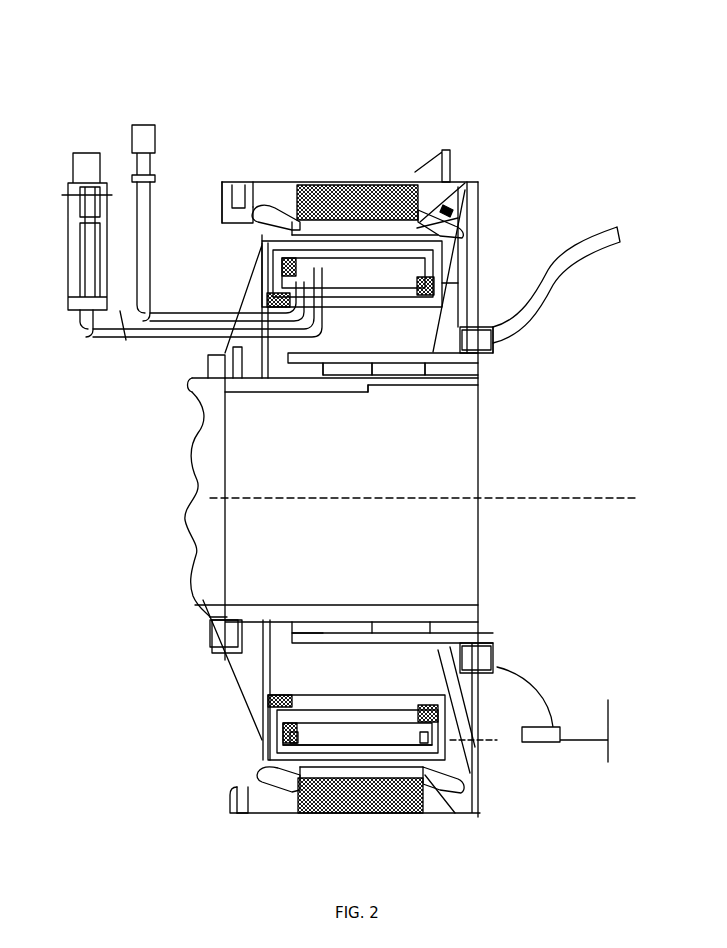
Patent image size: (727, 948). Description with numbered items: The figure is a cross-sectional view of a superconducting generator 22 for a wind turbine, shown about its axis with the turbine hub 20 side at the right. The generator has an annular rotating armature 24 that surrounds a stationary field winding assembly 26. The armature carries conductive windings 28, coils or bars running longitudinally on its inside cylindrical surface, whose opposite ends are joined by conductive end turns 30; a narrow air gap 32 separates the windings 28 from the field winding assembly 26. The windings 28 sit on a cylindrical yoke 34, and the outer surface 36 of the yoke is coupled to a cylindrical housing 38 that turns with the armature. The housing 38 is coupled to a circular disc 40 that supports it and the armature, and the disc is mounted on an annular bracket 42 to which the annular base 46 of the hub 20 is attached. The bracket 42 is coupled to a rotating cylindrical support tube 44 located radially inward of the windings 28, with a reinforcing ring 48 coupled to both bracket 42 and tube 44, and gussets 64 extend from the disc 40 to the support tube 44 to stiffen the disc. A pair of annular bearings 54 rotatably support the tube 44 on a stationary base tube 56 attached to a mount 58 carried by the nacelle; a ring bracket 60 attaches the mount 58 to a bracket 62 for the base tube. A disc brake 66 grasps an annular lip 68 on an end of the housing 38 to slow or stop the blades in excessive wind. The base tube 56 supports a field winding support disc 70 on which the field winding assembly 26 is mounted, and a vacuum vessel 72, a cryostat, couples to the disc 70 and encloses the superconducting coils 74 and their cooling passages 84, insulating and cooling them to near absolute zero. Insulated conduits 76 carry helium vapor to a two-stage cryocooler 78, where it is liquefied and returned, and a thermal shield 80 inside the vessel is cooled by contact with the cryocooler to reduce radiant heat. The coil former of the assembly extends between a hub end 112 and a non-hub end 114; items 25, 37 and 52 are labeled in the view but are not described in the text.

The hub 20 is at (593, 242).
The superconducting generator 22 is at (530, 56).
The rotating armature 24 is at (283, 207).
The bobbin flange 25 is at (262, 722).
The stationary field winding assembly 26 is at (470, 240).
The conductive windings 28 is at (300, 183).
The conductive end turns 30 is at (478, 190).
The air gap 32 is at (470, 215).
The cylindrical yoke 34 is at (340, 188).
The outer surface 36 is at (378, 185).
The angled terminal 37 is at (445, 650).
The cylindrical housing 38 is at (408, 185).
The circular disc 40 is at (478, 266).
The annular bracket 42 is at (480, 385).
The support tube 44 is at (376, 392).
The annular base 46 is at (495, 351).
The reinforcing ring 48 is at (460, 341).
The tab 52 is at (440, 172).
The annular bearings 54 is at (305, 392).
The base tube 56 is at (350, 695).
The mount 58 is at (192, 458).
The ring bracket 60 is at (220, 617).
The bracket 62 is at (208, 630).
The gussets 64 is at (226, 303).
The disc brake 66 is at (246, 392).
The annular lip 68 is at (222, 208).
The field winding support disc 70 is at (242, 612).
The vacuum vessel 72 is at (478, 283).
The superconducting coils 74 is at (332, 722).
The insulated conduits 76 is at (124, 340).
The two-stage cryocooler 78 is at (68, 275).
The thermal shield 80 is at (260, 200).
The cooling passages 84 is at (132, 170).
The hub end 112 is at (255, 745).
The non-hub end 114 is at (490, 726).